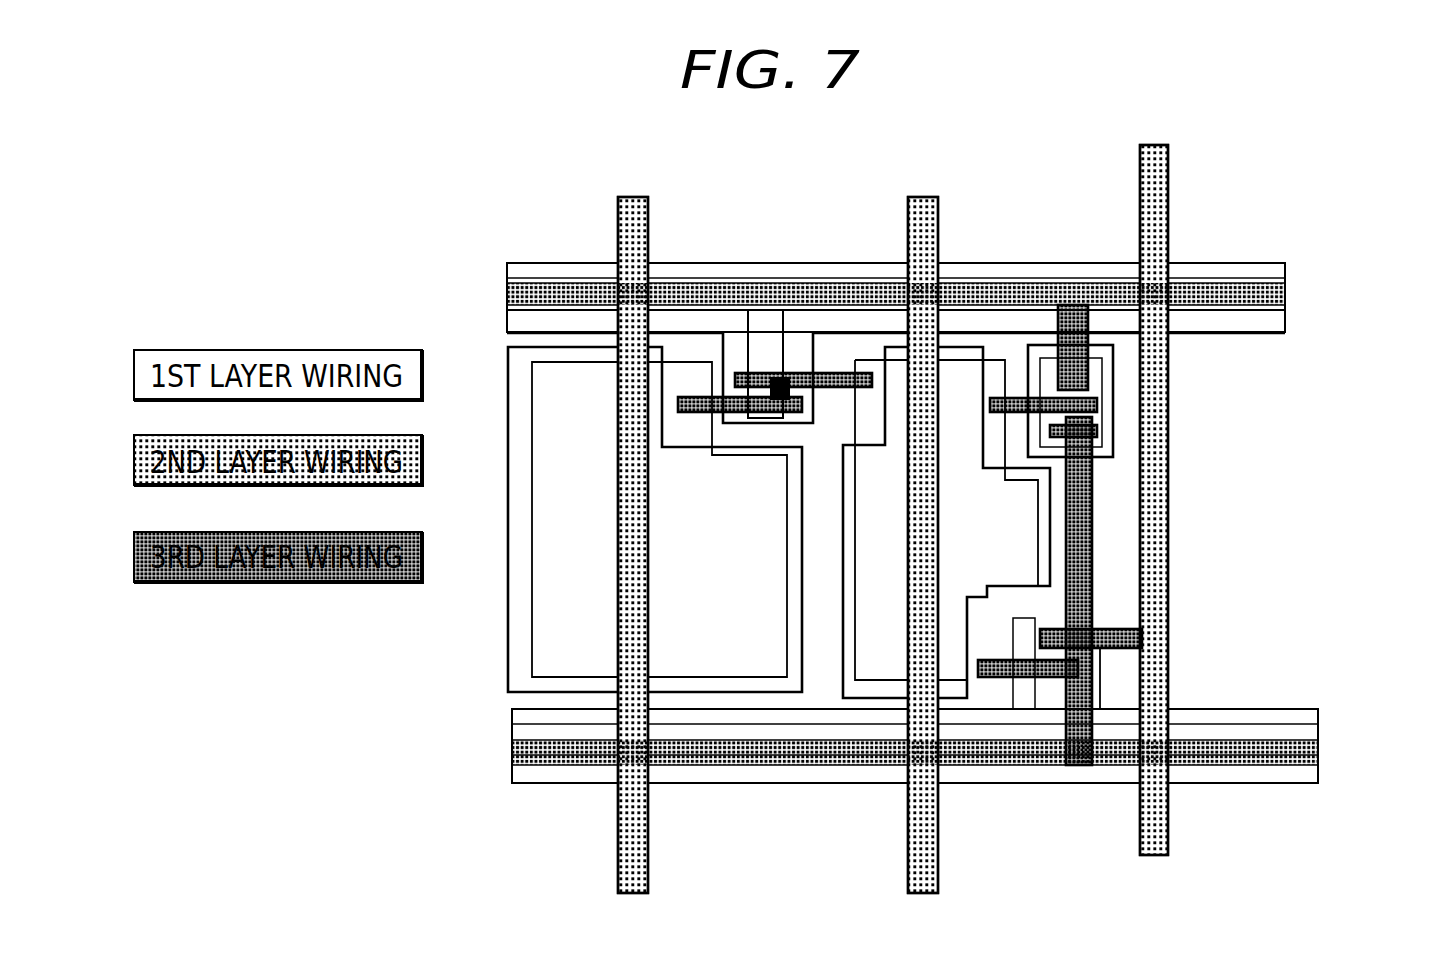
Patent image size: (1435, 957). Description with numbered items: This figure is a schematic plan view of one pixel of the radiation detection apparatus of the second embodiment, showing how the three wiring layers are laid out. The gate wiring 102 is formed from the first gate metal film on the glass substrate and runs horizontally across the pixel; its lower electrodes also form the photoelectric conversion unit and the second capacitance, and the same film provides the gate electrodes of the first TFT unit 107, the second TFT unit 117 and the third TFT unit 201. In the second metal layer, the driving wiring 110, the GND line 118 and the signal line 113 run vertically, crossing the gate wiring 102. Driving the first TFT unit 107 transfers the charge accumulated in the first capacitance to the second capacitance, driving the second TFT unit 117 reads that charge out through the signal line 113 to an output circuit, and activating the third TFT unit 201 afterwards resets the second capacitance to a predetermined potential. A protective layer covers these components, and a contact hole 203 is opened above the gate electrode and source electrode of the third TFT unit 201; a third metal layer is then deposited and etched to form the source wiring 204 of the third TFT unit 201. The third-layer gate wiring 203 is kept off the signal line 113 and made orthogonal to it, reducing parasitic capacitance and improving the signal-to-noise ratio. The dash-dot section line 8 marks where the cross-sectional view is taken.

The gate wiring 102 is at (953, 524).
The TFT unit 1 107 is at (775, 320).
The driving wiring 110 is at (632, 526).
The signal line 113 is at (1152, 479).
The TFT unit 2 117 is at (1060, 726).
The GND line 118 is at (922, 526).
The TFT unit 3 201 is at (1044, 340).
The contact hole / gate wiring of third layer 203 is at (1096, 292).
The source wiring 204 is at (1094, 564).
The line 8- 8 is at (1090, 403).